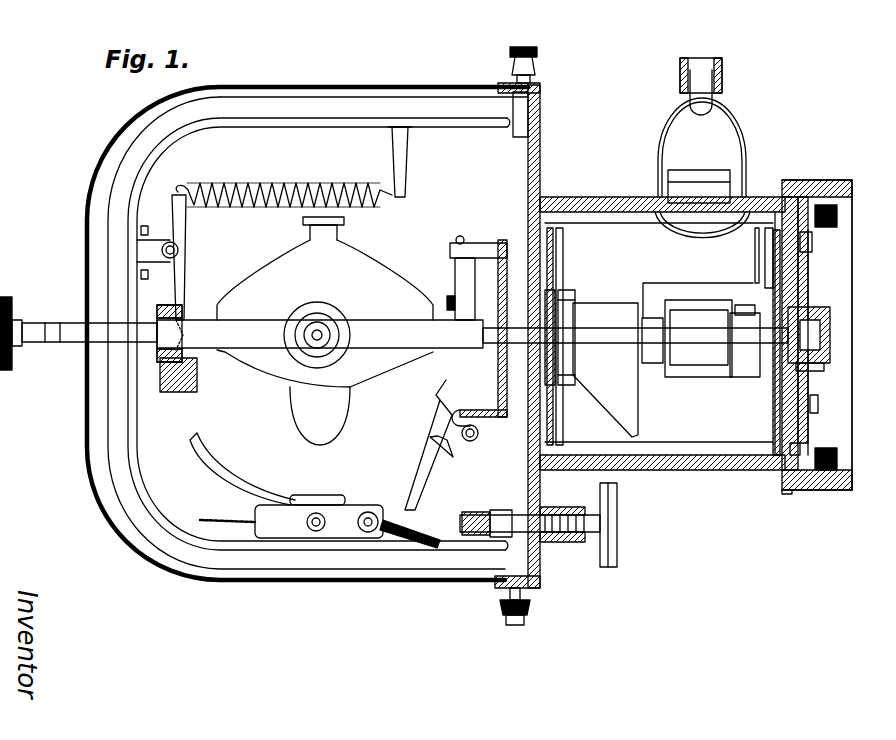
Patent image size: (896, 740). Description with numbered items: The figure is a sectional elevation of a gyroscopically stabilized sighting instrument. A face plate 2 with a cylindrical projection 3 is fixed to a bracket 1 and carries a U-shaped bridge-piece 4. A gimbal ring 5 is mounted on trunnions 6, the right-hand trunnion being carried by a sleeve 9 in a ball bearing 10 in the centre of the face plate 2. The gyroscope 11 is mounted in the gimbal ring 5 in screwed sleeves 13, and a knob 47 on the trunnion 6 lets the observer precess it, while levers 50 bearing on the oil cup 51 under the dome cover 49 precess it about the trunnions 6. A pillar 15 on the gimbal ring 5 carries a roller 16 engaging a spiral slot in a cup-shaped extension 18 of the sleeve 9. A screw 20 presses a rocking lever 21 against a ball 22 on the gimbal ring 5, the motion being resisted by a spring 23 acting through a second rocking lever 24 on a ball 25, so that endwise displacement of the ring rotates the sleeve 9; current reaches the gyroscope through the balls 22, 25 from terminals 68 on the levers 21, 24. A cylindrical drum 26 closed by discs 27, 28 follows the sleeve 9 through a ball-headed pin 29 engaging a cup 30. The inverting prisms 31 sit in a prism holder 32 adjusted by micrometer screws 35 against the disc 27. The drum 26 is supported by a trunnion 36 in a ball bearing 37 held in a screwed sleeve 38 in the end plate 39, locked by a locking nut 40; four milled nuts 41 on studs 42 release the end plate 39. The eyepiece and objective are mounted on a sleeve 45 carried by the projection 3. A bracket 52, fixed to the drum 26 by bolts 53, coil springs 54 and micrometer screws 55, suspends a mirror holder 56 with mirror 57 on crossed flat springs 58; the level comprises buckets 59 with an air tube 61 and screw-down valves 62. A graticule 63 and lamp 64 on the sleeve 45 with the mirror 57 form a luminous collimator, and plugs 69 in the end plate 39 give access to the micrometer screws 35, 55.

The bracket 1 is at (795, 240).
The face plate 2 is at (540, 115).
The cylindrical projection 3 is at (592, 230).
The U-shaped bridge-piece 4 is at (440, 110).
The gimbal ring 5 is at (180, 337).
The trunnions 6 is at (494, 260).
The sleeve 9 is at (540, 230).
The ball bearing 10 is at (545, 200).
The gyroscope 11 is at (288, 290).
The screwed sleeves 13 is at (338, 300).
The pillar 15 is at (475, 258).
The roller 16 is at (456, 243).
The cup-shaped extension 18 is at (492, 470).
The screw 20 is at (603, 570).
The rocking lever 21 is at (460, 470).
The ball 22 is at (430, 470).
The spring 23 is at (365, 200).
The second rocking lever 24 is at (178, 230).
The ball 25 is at (180, 335).
The cylindrical drum 26 is at (607, 223).
The disc 27 is at (548, 400).
The disc 28 is at (775, 470).
The ball-headed pin 29 is at (542, 540).
The cup 30 is at (552, 545).
The inverting prisms 31 is at (622, 303).
The prism holder 32 is at (566, 395).
The micrometer screws 35 is at (577, 270).
The trunnion 36 is at (820, 338).
The ball bearing 37 is at (790, 494).
The screwed sleeve 38 is at (822, 368).
The end plate 39 is at (810, 420).
The locking nut 40 is at (790, 300).
The milled nuts 41 is at (845, 490).
The studs 42 is at (805, 490).
The sleeve 45 is at (642, 197).
The knob 47 is at (14, 358).
The dome cover 49 is at (103, 152).
The levers 50 is at (430, 480).
The oil cup 51 is at (300, 455).
The bracket 52 is at (762, 228).
The bolts 53 is at (775, 228).
The coil springs 54 is at (800, 232).
The micrometer screws 55 is at (805, 240).
The mirror holder 56 is at (672, 470).
The mirror 57 is at (693, 340).
The crossed flat springs 58 is at (650, 340).
The buckets 59 is at (750, 345).
The air tube 61 is at (746, 245).
The screw-down valves 62 is at (748, 320).
The graticule 63 is at (695, 180).
The lamp 64 is at (695, 92).
The terminals 68 is at (522, 540).
The plugs 69 is at (818, 407).